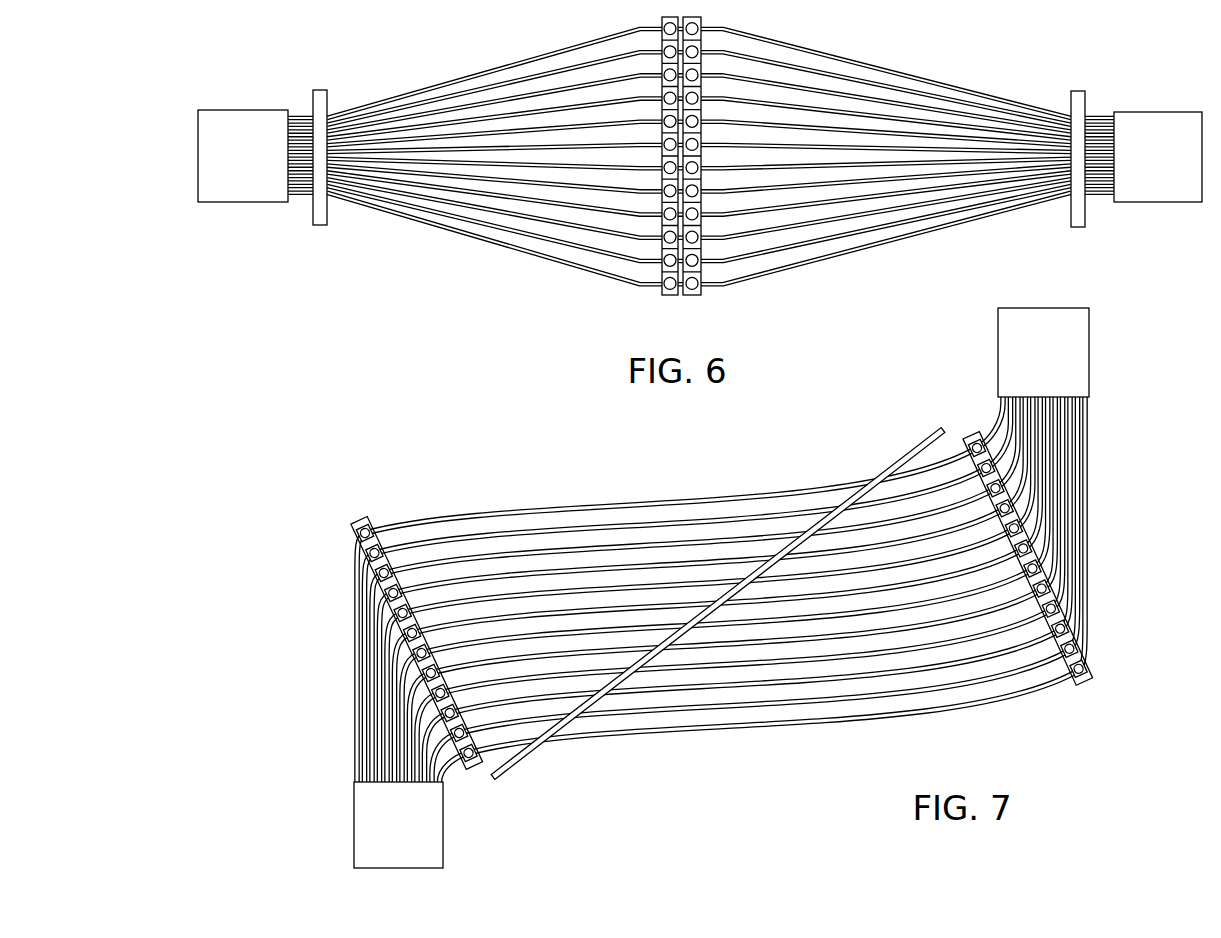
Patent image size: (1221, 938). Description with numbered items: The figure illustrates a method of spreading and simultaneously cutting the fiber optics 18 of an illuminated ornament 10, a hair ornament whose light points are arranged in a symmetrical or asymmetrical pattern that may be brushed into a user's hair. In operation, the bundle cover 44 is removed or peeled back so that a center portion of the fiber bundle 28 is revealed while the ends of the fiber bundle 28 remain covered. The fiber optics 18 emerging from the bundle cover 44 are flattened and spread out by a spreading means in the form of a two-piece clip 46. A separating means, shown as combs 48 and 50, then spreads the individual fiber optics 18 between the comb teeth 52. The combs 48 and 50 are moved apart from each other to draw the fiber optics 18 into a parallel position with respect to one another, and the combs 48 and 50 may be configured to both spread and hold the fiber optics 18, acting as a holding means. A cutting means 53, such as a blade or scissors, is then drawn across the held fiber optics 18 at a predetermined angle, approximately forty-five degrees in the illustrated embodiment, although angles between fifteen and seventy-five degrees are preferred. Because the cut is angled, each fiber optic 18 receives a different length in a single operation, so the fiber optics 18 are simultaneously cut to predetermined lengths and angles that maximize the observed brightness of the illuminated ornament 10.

In FIG. 7, the illuminated ornament 10 is at (272, 455).
In FIG. 6, the fiber optics 18 is at (418, 92).
In FIG. 7, the fiber optics 18 is at (737, 707).
In FIG. 6, the fiber bundle 28 is at (297, 116).
In FIG. 6, the bundle cover 44 is at (210, 203).
In FIG. 7, the bundle cover 44 is at (443, 825).
In FIG. 6, the two-piece clip 46 is at (318, 226).
In FIG. 6, the comb 48 is at (662, 283).
In FIG. 7, the comb 48 is at (368, 516).
In FIG. 6, the comb 50 is at (700, 289).
In FIG. 7, the comb 50 is at (972, 437).
In FIG. 6, the comb teeth 52 is at (703, 275).
In FIG. 7, the cutting means 53 is at (540, 748).